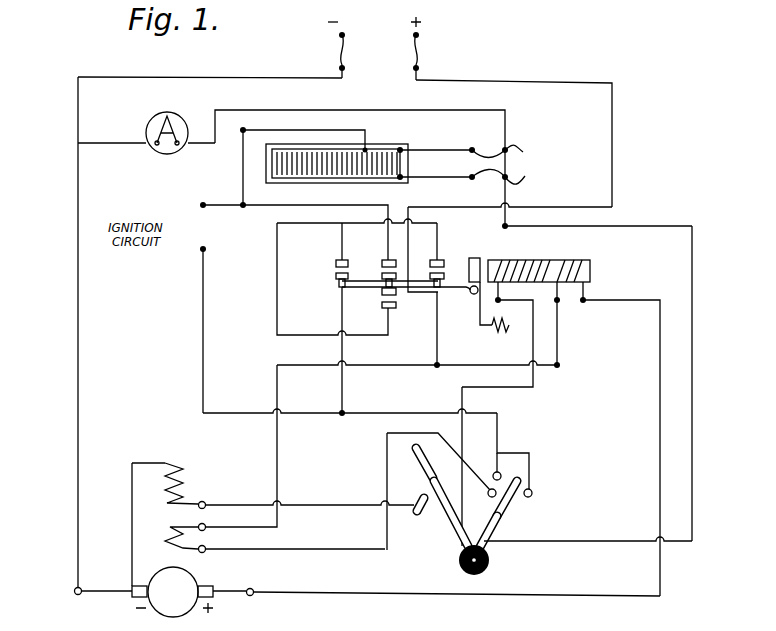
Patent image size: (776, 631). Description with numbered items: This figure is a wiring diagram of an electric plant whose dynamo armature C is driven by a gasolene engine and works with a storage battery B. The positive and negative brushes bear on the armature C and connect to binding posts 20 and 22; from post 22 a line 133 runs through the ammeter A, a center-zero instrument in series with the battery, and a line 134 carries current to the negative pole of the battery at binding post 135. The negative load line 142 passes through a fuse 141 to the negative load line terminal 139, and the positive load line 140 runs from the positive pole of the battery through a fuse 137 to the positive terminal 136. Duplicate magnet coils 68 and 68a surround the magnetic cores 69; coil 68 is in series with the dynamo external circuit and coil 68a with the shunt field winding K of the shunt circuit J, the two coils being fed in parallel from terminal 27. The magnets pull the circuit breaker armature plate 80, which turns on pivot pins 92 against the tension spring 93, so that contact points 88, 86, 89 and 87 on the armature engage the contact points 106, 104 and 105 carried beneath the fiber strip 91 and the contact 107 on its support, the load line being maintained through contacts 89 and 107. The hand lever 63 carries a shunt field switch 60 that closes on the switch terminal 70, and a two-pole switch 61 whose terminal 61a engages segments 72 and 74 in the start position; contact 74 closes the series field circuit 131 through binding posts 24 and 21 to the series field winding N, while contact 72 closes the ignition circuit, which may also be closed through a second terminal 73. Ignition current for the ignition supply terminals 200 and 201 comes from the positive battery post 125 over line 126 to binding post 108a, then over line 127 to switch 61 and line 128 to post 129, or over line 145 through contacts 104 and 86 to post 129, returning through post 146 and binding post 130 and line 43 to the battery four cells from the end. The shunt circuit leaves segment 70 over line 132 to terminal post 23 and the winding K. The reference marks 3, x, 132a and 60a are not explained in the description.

The negative load line terminal 139 is at (339, 35).
The fuse 141 is at (339, 62).
The positive load line terminal 136 is at (419, 35).
The fuse 137 is at (419, 64).
The negative load line 142 is at (222, 77).
The positive load line 140 is at (598, 81).
The line 133 is at (78, 334).
The ammeter A is at (146, 133).
The line 134 is at (398, 110).
The line 43 is at (332, 130).
The binding post 130 is at (243, 132).
The post 146 is at (242, 215).
The storage battery B is at (373, 157).
The binding post 135 is at (509, 158).
The positive battery binding post 125 is at (512, 172).
The line 145 is at (350, 205).
The ignition supply terminal 200 is at (200, 205).
The ignition supply terminal 201 is at (200, 249).
The line 126 is at (478, 228).
The binding post 108a is at (507, 226).
The line 127 is at (692, 392).
The contact point 86 is at (335, 262).
The contact point 104 is at (336, 276).
The contact point 105 is at (384, 260).
The contact point 87 is at (383, 276).
The contact point 89 is at (382, 294).
The contact 107 is at (386, 308).
The contact point 88 is at (430, 264).
The fiber strip 91 is at (434, 288).
The pivot pins 92 is at (473, 295).
The contact point 106 is at (437, 300).
The circuit breaker armature plate 80 is at (472, 260).
The tension spring 93 is at (509, 327).
The magnetic cores 69 is at (512, 252).
The magnet coil 68a is at (539, 260).
The magnet coil 68 is at (580, 260).
The winding tap 3 is at (555, 299).
The conductor x is at (559, 331).
The terminal 27 is at (437, 365).
The ignition terminal post 129 is at (350, 352).
The line 128 is at (404, 413).
The conductor 132a is at (530, 452).
The contact segment 72 is at (493, 473).
The second terminal 73 is at (532, 493).
The hand lever 63 is at (408, 449).
The contact segment 74 is at (490, 497).
The shunt field switch 60 is at (446, 526).
The switch arm portion 60a is at (465, 543).
The two-pole switch 61 is at (507, 518).
The switch terminal 61a is at (486, 548).
The switch terminal 70 is at (416, 502).
The line 132 is at (350, 505).
The series field circuit line 131 is at (353, 550).
The shunt circuit J is at (160, 463).
The shunt field winding K is at (165, 488).
The terminal post 23 is at (204, 502).
The series field winding N is at (165, 536).
The binding post 21 is at (205, 525).
The binding post 24 is at (204, 552).
The binding post 22 is at (74, 591).
The armature of the dynamo C is at (172, 592).
The binding post 20 is at (252, 596).